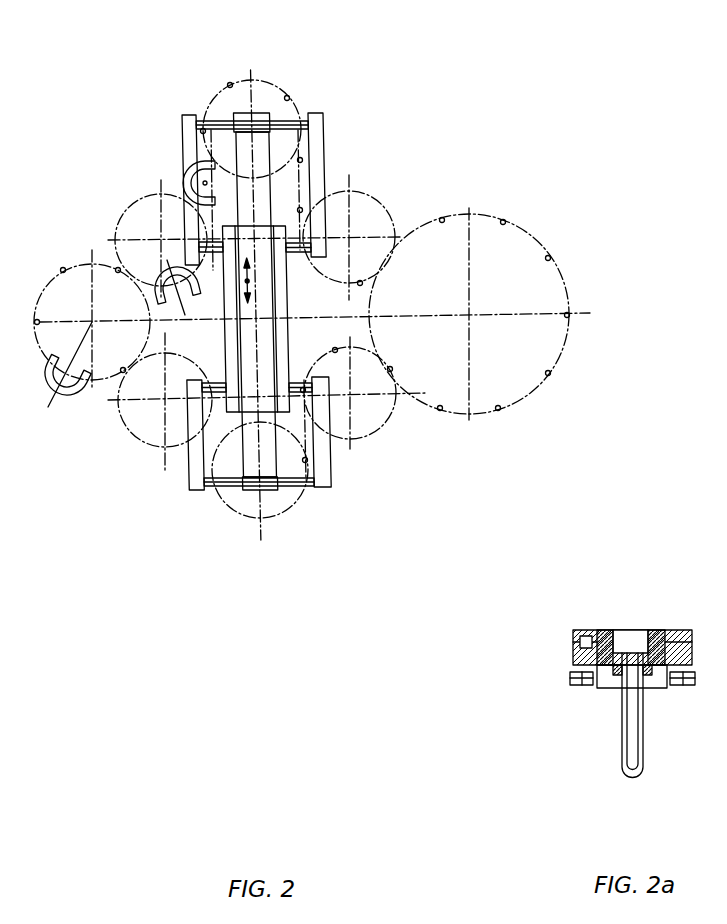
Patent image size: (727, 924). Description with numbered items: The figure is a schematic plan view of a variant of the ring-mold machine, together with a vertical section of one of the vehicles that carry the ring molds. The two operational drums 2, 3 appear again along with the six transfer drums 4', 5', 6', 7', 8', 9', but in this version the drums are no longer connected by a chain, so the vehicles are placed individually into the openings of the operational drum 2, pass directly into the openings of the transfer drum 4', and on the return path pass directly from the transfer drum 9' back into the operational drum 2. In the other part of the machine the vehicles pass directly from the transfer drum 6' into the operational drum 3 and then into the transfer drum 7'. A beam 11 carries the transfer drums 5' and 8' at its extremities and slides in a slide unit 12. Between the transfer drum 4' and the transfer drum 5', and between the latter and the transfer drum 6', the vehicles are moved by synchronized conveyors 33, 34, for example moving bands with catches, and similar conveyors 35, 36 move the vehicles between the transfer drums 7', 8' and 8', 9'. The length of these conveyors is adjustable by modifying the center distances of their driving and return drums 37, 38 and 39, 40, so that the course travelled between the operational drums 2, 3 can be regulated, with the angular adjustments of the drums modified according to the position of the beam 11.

The operational drum 2 is at (62, 297).
The operational drum 3 is at (515, 253).
The transfer drum 4' is at (153, 216).
The transfer drum 5' is at (252, 93).
The transfer drum 6' is at (369, 234).
The transfer drum 7' is at (372, 407).
The transfer drum 8' is at (262, 501).
The transfer drum 9' is at (154, 419).
The beam 11 is at (262, 202).
The slide unit 12 is at (235, 345).
The conveyor 33 is at (187, 118).
The conveyor 34 is at (315, 140).
The conveyor 35 is at (322, 468).
The conveyor 36 is at (195, 482).
The driving drum 37 is at (288, 123).
The return drum 38 is at (295, 255).
The driving drum 39 is at (297, 385).
The return drum 40 is at (298, 483).